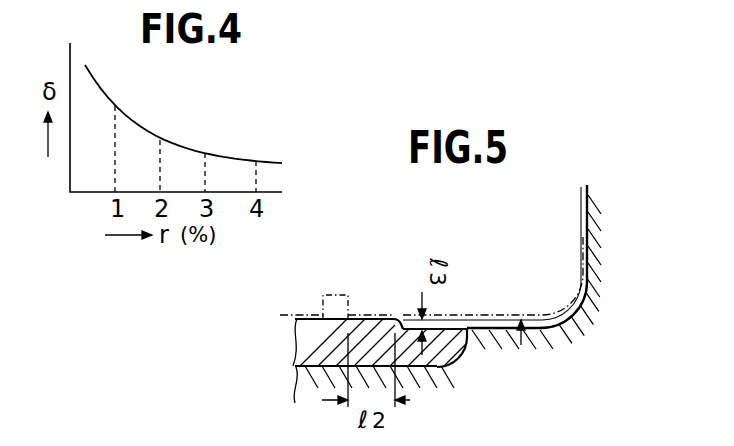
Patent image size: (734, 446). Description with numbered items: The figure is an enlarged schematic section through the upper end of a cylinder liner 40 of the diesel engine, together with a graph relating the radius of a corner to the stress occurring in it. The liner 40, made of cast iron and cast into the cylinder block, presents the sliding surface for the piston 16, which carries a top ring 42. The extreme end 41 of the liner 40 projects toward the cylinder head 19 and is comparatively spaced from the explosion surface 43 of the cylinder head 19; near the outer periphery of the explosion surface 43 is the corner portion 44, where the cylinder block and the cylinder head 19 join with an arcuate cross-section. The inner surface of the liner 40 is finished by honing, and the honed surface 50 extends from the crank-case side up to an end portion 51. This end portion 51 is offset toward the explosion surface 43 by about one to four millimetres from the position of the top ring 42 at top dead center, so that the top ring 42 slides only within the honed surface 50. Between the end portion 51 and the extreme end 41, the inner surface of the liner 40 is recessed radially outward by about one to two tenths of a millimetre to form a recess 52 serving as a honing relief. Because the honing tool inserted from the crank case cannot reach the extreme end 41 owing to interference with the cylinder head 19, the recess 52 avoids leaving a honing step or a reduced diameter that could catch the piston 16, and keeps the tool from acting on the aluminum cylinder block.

The piston 16 is at (521, 345).
The cylinder head 19 is at (592, 252).
The liner 40 is at (287, 345).
The end of the liner 41 is at (466, 332).
The top ring 42 is at (338, 303).
The explosion surface 43 is at (587, 237).
The corner portion 44 is at (575, 333).
The surface finished by honing 50 is at (311, 318).
The end portion 51 is at (394, 318).
The recess 52 is at (450, 328).